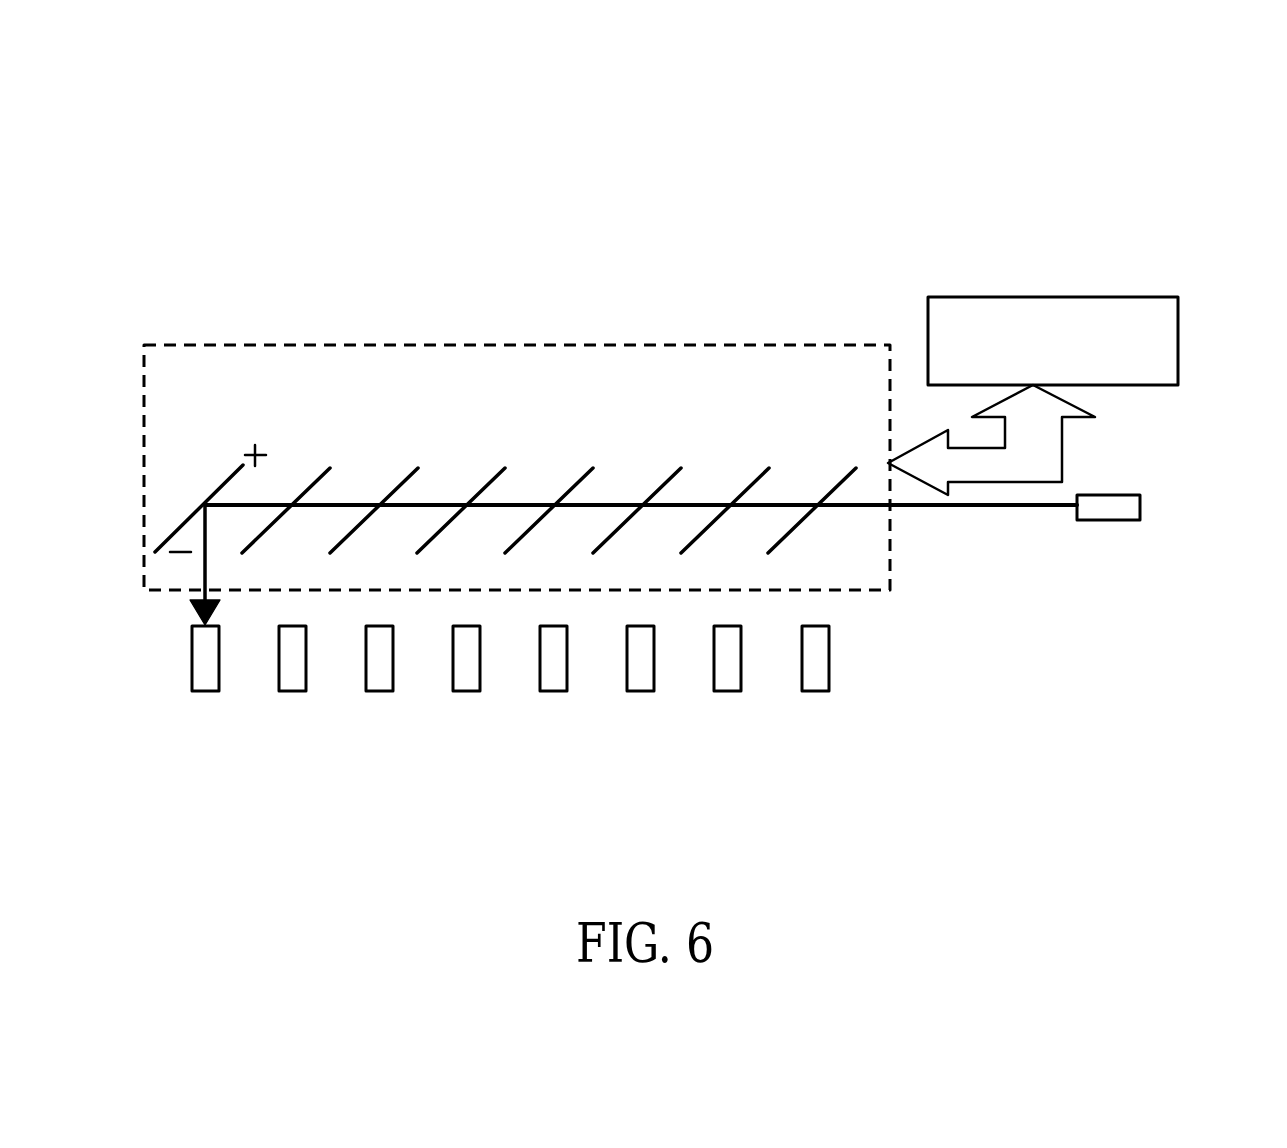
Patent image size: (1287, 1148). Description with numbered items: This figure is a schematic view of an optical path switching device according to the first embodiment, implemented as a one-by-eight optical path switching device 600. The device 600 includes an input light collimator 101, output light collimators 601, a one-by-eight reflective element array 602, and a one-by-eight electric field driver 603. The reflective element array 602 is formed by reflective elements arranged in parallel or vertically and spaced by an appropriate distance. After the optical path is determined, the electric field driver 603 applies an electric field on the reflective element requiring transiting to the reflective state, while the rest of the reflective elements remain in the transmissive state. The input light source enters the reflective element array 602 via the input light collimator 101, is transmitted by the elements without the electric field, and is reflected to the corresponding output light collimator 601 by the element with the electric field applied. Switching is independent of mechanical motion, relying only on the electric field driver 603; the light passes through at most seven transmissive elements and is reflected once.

The 1×8 optical path switching device 600 is at (1173, 147).
The output light collimators 601 is at (815, 702).
The 1×8 reflective element array 602 is at (893, 540).
The 1×8 electric field driver 603 is at (1053, 297).
The input light collimator 101 is at (1115, 495).